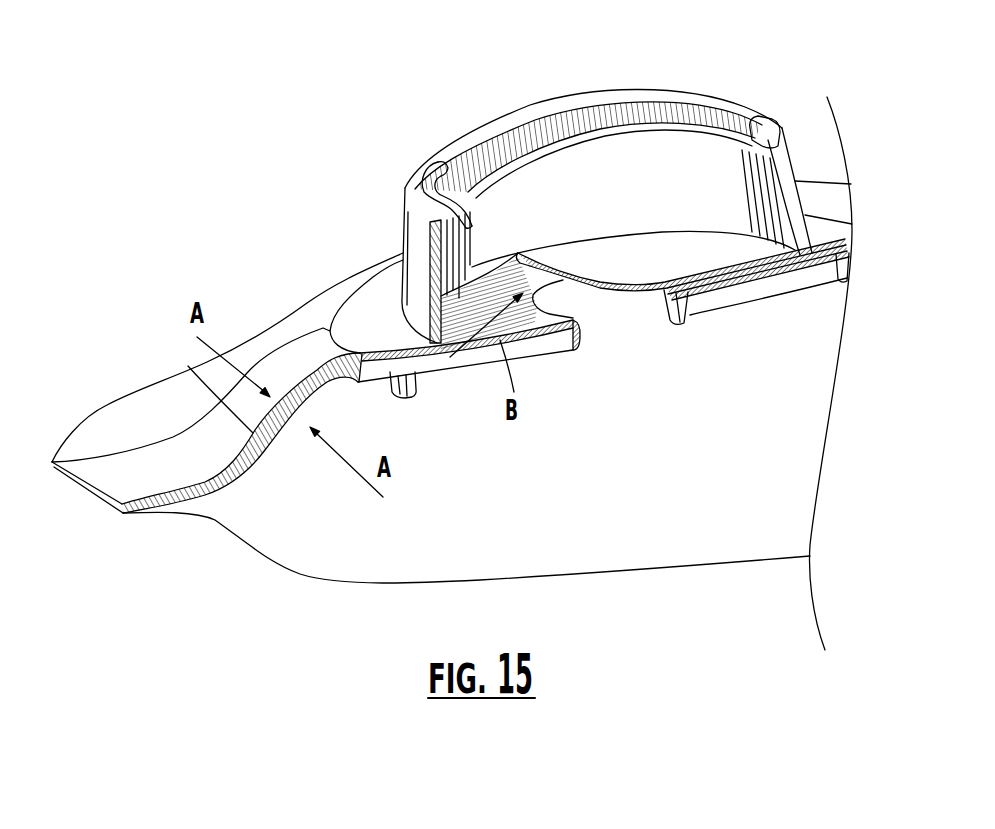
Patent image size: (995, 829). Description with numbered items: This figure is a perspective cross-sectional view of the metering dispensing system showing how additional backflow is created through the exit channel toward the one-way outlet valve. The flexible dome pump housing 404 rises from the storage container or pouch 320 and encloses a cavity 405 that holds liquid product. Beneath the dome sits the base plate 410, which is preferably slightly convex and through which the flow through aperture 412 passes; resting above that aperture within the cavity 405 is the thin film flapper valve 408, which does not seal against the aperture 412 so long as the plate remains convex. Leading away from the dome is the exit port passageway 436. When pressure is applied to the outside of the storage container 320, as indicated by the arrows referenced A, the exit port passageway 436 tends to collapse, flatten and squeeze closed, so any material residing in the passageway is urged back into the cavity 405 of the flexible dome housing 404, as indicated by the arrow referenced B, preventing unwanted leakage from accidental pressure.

The storage container 320 is at (297, 317).
The flexible dome pump housing 404 is at (663, 110).
The cavity 405 is at (542, 208).
The flapper valve 408 is at (587, 297).
The base plate 410 is at (767, 272).
The flow through aperture 412 is at (637, 297).
The exit port passageway 436 is at (167, 397).